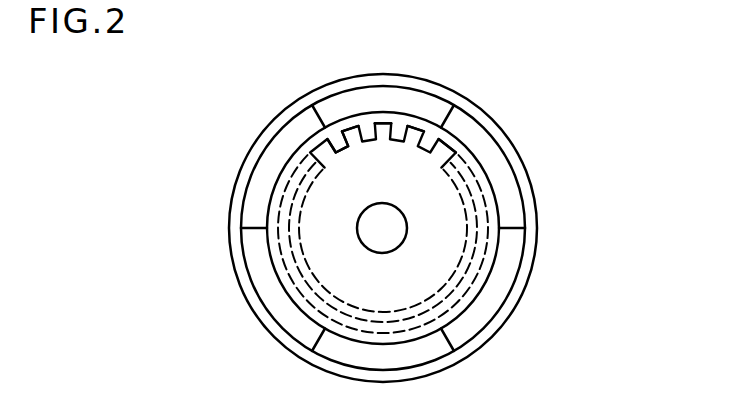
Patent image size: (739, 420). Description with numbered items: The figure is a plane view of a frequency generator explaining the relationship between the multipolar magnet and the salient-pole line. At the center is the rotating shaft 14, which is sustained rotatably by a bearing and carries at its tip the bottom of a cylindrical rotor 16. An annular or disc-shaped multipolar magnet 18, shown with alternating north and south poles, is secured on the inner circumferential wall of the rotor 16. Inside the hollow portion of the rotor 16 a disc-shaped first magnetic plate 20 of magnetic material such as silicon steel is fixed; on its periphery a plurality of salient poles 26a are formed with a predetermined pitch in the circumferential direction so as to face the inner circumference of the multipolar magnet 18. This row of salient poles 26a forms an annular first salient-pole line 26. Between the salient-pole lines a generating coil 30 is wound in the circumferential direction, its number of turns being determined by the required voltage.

The rotating shaft 14 is at (367, 235).
The rotor 16 is at (503, 320).
The multipolar magnet 18 is at (460, 332).
The first magnetic plate 20 is at (460, 219).
The first salient-pole line 26 is at (313, 158).
The salient pole 26a is at (443, 148).
The generating coil 30 is at (332, 140).